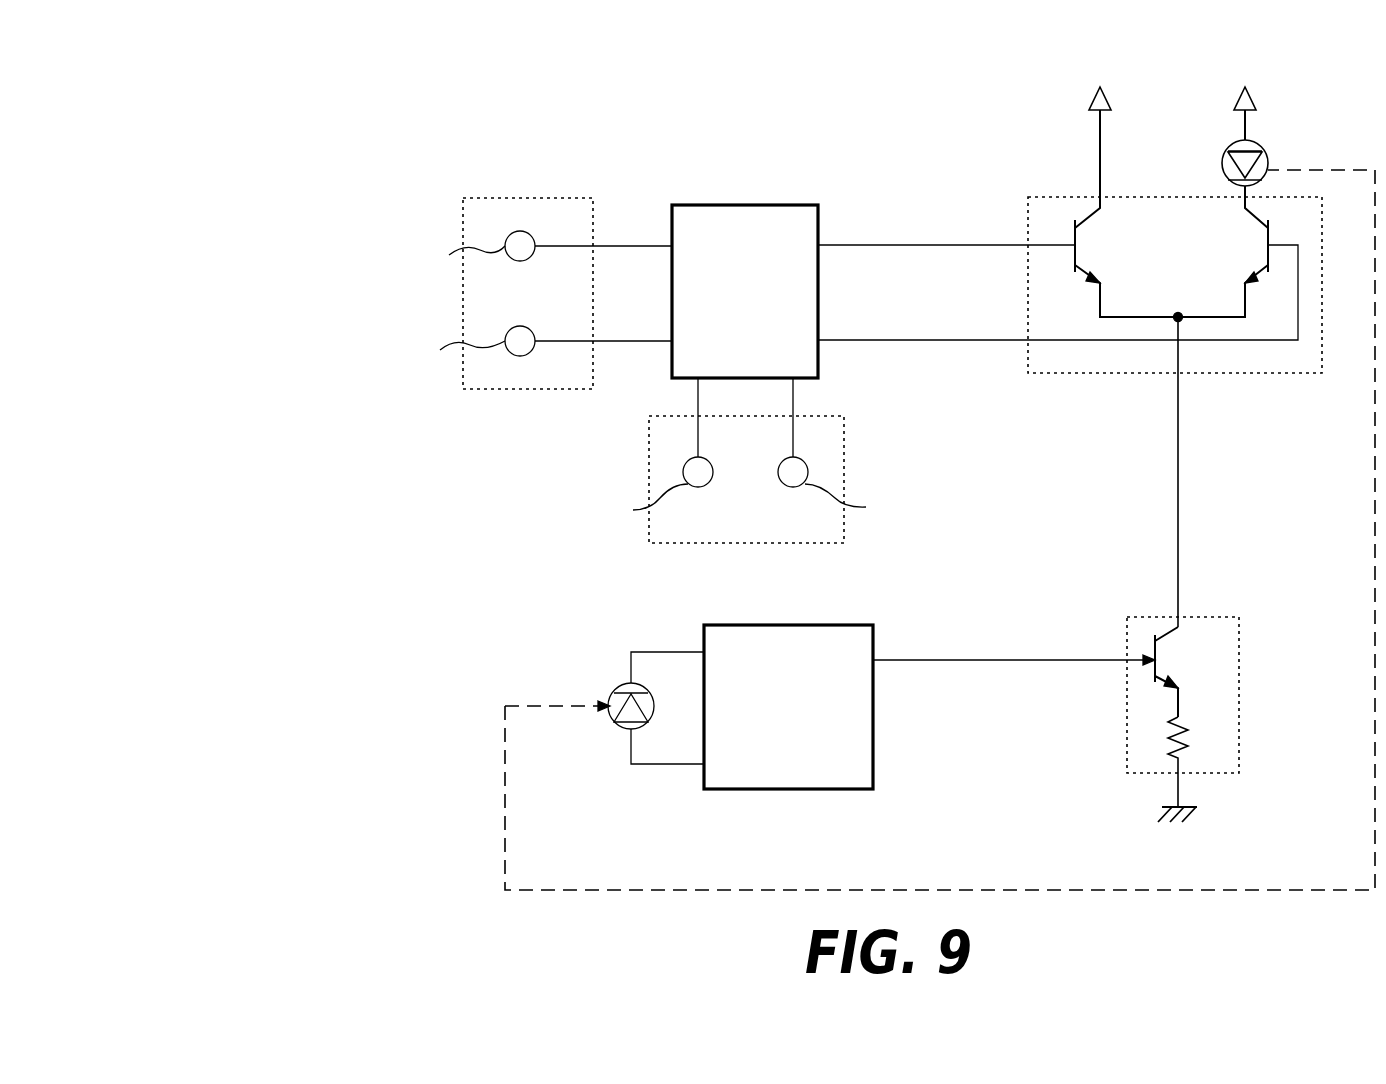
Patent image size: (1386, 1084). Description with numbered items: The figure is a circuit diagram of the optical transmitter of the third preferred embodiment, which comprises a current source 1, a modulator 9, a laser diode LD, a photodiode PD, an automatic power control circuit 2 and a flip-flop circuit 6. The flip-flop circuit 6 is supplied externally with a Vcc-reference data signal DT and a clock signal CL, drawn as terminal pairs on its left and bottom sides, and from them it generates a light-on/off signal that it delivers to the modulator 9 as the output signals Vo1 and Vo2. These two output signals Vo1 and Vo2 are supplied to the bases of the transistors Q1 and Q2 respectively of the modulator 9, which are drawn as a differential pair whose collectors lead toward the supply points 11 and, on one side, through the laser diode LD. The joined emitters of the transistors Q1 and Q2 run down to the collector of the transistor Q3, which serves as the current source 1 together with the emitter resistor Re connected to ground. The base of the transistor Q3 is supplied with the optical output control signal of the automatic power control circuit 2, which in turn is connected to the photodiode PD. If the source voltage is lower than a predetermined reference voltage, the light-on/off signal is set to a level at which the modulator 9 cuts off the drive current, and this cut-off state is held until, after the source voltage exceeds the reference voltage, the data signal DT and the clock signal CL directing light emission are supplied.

The current source 1 is at (1207, 719).
The automatic power control circuit 2 is at (845, 625).
The flip-flop circuit 6 is at (767, 205).
The modulator 9 is at (1175, 241).
The power supply 11 is at (1089, 100).
The data signal DT is at (536, 198).
The clock signal CL is at (650, 478).
The output signal Vo1 is at (946, 230).
The output signal Vo2 is at (1058, 293).
The transistor Q1 is at (1126, 213).
The transistor Q2 is at (1223, 251).
The transistor Q3 is at (1178, 672).
The emitter resistor Re is at (1194, 762).
The laser diode LD is at (1268, 159).
The photodiode PD is at (612, 694).